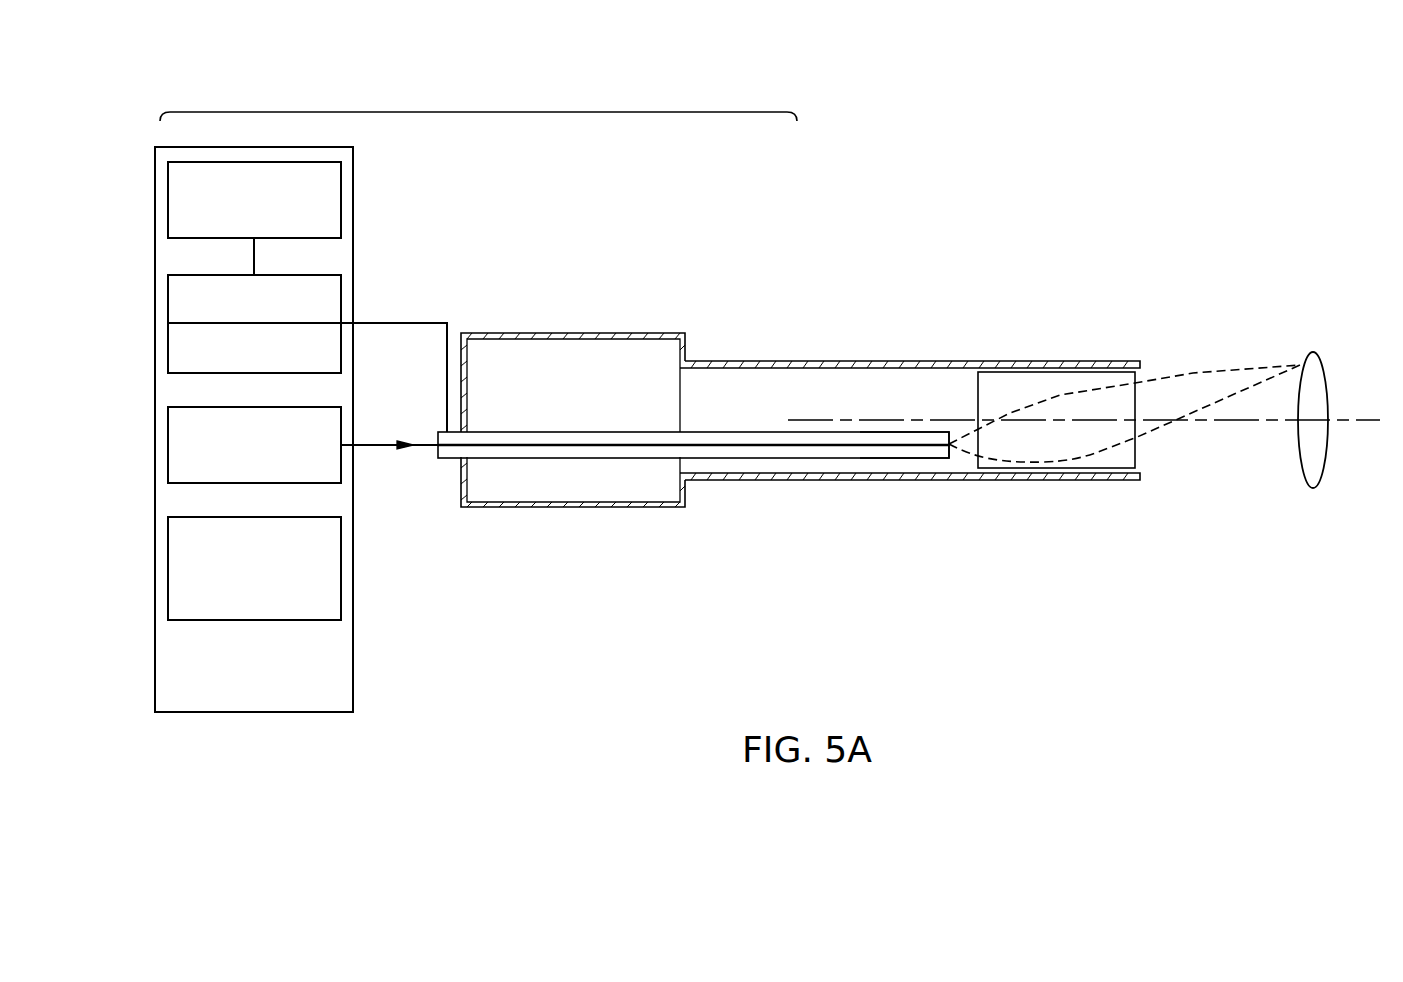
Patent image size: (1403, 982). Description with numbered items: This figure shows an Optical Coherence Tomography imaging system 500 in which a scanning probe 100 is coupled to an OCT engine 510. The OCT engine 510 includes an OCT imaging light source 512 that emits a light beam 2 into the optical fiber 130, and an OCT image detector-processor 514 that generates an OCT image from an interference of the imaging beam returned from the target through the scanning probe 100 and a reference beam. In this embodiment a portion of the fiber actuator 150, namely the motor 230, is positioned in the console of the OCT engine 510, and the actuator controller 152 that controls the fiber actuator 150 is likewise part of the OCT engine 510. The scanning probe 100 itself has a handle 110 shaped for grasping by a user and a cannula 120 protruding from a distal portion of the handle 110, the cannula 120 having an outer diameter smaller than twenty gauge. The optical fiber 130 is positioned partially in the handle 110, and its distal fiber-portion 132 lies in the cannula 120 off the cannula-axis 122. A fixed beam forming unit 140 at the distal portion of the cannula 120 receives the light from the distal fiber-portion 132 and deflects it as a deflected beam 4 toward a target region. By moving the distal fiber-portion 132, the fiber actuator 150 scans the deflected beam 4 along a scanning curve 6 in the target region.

The OCT imaging system 500 is at (478, 112).
The OCT engine 510 is at (353, 685).
The actuator controller 152 is at (342, 193).
The fiber actuator 150 is at (342, 297).
The motor 230 is at (342, 347).
The OCT imaging light source 512 is at (343, 418).
The OCT image detector-processor 514 is at (341, 602).
The light beam 2 is at (380, 448).
The scanning probe 100 is at (799, 265).
The handle 110 is at (513, 508).
The cannula 120 is at (917, 360).
The cannula-axis 122 is at (877, 420).
The optical fiber 130 is at (725, 459).
The distal fiber-portion 132 is at (907, 458).
The beam forming unit 140 is at (1040, 378).
The deflected beam 4 is at (1198, 377).
The scanning curve 6 is at (1300, 479).